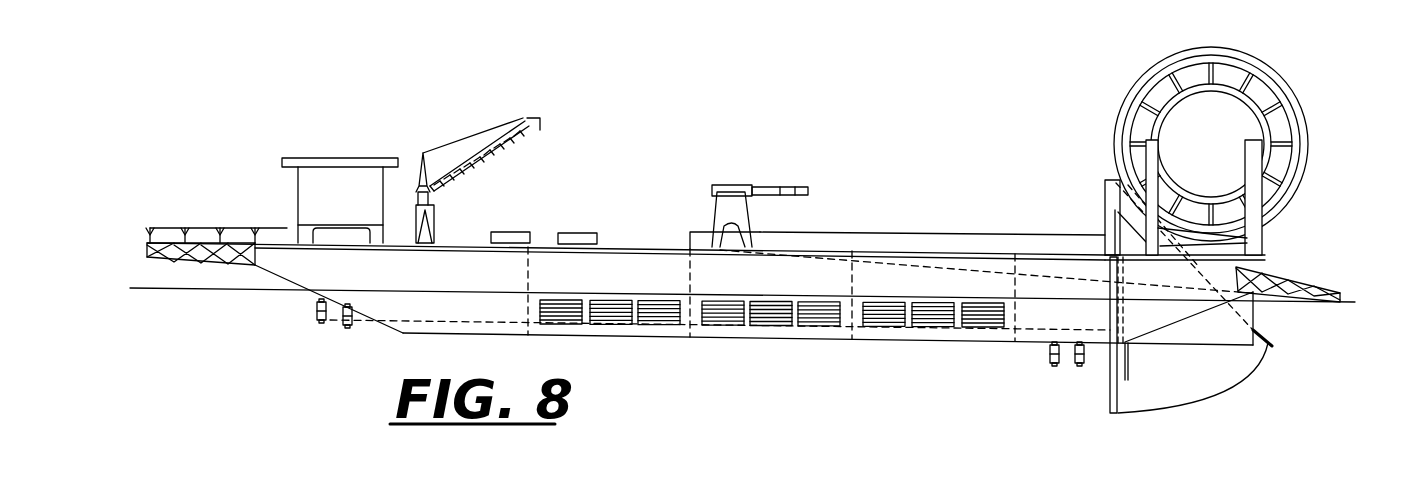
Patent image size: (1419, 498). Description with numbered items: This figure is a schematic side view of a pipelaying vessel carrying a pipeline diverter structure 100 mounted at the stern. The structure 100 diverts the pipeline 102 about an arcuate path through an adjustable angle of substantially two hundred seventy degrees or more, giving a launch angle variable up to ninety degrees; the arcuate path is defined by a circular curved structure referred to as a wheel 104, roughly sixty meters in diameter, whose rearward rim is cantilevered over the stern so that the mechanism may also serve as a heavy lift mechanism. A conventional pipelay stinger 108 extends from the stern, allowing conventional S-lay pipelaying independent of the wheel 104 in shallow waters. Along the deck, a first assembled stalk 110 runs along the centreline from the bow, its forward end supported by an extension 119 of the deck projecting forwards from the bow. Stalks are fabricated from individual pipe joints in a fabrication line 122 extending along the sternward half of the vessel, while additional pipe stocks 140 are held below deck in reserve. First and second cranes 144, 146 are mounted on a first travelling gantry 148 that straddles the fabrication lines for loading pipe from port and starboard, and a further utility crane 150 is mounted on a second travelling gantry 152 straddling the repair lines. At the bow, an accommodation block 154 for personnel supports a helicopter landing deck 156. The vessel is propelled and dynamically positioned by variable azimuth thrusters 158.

The pipeline diverter structure 100 is at (1306, 76).
The pipeline 102 is at (1128, 367).
The wheel 104 is at (1305, 117).
The pipelay stinger 108 is at (1335, 293).
The first assembled stalk 110 is at (627, 243).
The deck extension 119 is at (180, 262).
The second stalk fabrication line 122 is at (993, 233).
The below-deck pipe stocks 140 is at (560, 325).
The first crane 144 is at (797, 152).
The second crane 146 is at (762, 187).
The first travelling gantry 148 is at (718, 207).
The utility crane 150 is at (508, 133).
The second travelling gantry 152 is at (416, 213).
The accommodation block 154 is at (313, 164).
The helicopter landing deck 156 is at (320, 158).
The variable azimuth thrusters 158 is at (344, 326).